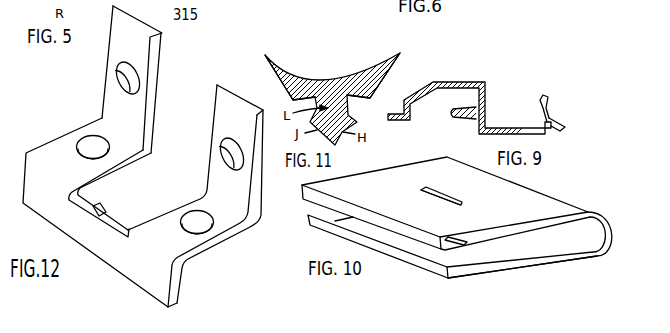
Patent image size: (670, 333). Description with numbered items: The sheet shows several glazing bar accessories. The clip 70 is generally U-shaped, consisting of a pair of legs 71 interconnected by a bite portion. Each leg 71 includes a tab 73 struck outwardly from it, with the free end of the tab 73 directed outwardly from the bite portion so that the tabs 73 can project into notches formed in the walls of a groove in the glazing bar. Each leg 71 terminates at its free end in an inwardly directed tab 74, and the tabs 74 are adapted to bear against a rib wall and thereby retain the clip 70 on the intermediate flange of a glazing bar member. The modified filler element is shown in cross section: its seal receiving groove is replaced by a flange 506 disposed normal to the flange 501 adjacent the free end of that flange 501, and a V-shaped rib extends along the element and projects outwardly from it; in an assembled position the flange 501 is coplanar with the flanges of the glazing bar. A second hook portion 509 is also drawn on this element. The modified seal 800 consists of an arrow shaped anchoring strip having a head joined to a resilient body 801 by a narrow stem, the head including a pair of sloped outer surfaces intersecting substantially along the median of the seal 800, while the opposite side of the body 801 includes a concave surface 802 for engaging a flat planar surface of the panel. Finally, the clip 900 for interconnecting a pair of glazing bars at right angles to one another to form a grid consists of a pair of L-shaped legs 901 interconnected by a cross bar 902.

In FIG. 12, the clip 900 is at (156, 156).
In FIG. 12, the L-shaped leg 901 is at (144, 104).
In FIG. 12, the cross bar 902 is at (99, 214).
In FIG. 11, the seal 800 is at (312, 88).
In FIG. 11, the resilient body 801 is at (296, 72).
In FIG. 11, the concave surface 802 is at (333, 75).
In FIG. 9, the flange 501 is at (488, 118).
In FIG. 9, the flange 506 is at (550, 101).
In FIG. 9, the lip portion 509 is at (559, 124).
In FIG. 10, the clip 70 is at (467, 229).
In FIG. 10, the leg 71 is at (540, 261).
In FIG. 10, the tab 73 is at (440, 192).
In FIG. 10, the tab 74 is at (405, 230).